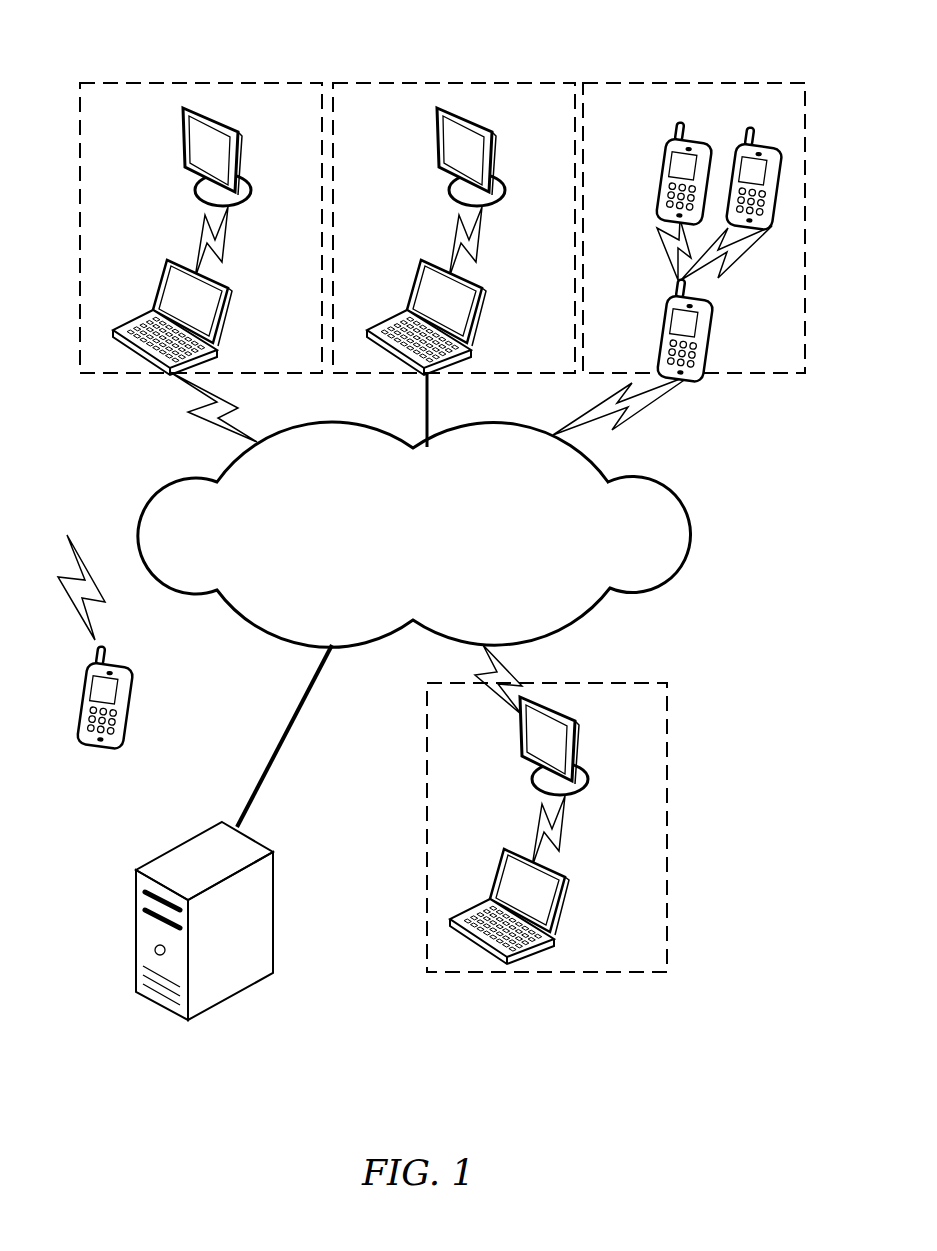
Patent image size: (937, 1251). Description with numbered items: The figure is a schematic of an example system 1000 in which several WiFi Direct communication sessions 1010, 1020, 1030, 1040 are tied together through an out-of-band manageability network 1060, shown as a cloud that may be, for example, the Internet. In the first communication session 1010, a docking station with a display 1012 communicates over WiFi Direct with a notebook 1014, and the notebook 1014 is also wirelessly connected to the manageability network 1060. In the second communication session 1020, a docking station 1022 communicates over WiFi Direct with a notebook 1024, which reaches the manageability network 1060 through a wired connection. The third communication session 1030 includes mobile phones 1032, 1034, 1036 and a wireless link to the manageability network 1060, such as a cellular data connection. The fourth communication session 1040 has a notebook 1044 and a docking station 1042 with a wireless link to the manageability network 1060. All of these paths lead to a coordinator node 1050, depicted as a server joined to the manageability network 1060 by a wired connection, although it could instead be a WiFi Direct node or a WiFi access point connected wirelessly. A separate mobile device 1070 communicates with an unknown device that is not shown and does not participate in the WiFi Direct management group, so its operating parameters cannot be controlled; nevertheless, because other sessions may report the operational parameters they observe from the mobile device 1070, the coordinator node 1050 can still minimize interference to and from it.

The system 1000 is at (112, 37).
The communication session 1010 is at (214, 69).
The docking station with a display 1012 is at (241, 130).
The notebook 1014 is at (229, 291).
The communication session 1020 is at (431, 67).
The docking station 1022 is at (501, 154).
The notebook 1024 is at (460, 317).
The communication session 1030 is at (699, 70).
The mobile phone 1032 is at (668, 152).
The mobile phone 1034 is at (743, 123).
The mobile phone 1036 is at (714, 322).
The communication session 1040 is at (662, 709).
The docking station 1042 is at (582, 744).
The notebook 1044 is at (542, 906).
The coordinator node 1050 is at (272, 848).
The out-of-band manageability network 1060 is at (627, 598).
The mobile device 1070 is at (135, 741).